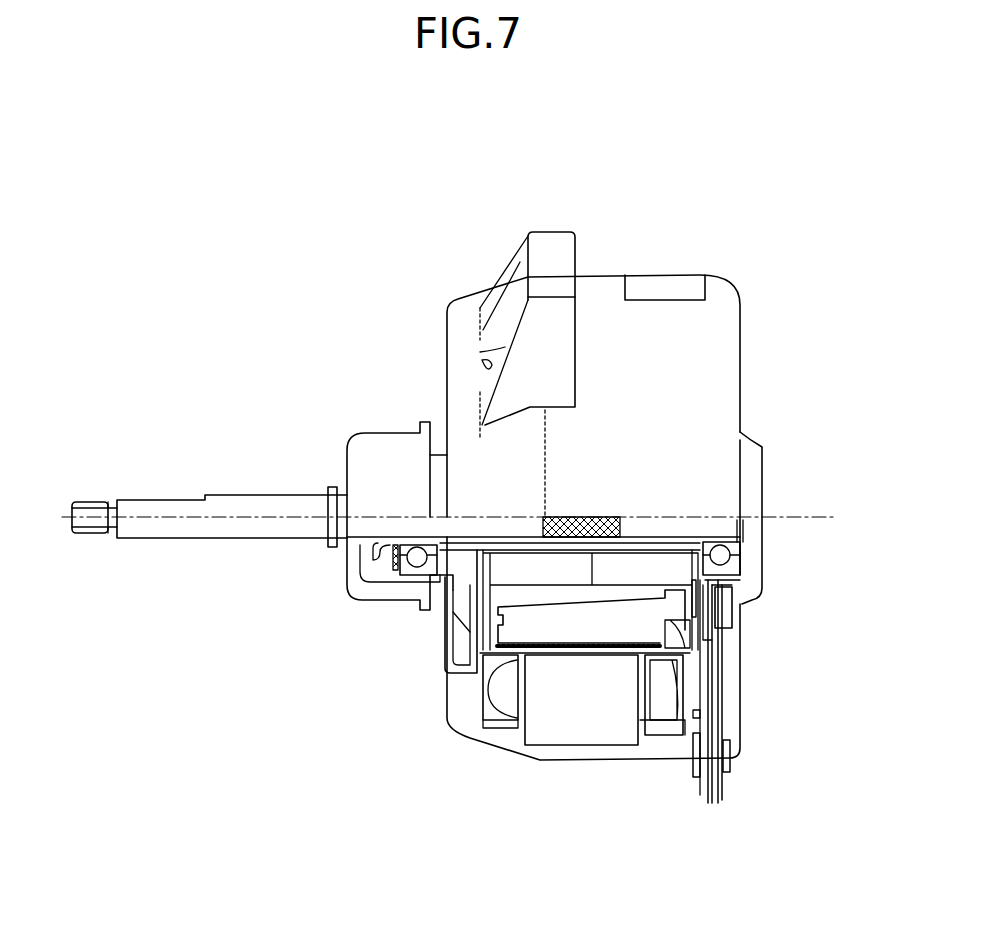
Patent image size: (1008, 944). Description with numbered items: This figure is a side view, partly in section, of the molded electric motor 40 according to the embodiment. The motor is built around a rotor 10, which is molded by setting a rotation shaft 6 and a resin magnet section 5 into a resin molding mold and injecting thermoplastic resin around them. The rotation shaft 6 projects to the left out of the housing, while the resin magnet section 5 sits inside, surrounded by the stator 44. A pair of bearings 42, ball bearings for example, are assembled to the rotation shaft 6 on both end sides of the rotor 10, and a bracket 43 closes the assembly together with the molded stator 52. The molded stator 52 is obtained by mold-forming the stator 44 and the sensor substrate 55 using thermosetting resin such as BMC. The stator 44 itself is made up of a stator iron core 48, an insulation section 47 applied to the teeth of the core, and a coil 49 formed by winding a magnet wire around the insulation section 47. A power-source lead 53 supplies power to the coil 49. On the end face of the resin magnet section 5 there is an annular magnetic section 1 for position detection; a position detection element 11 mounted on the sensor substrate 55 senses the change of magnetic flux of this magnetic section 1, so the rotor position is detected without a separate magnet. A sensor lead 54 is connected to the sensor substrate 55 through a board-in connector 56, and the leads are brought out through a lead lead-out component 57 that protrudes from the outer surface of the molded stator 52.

The molded electric motor 40 is at (670, 171).
The molded stator 52 is at (663, 295).
The rotation shaft 6 is at (152, 538).
The bearings 42 is at (410, 567).
The bracket 43 is at (462, 620).
The resin magnet section 5 is at (590, 623).
The stator 44 is at (540, 780).
The coil 49 is at (495, 700).
The insulation section 47 is at (503, 723).
The stator iron core 48 is at (545, 718).
The magnetic section 1 is at (675, 618).
The rotor 10 is at (684, 658).
The position detection element 11 is at (703, 607).
The sensor substrate 55 is at (708, 582).
The board-in connector 56 is at (728, 588).
The sensor lead 54 is at (722, 793).
The lead lead-out component 57 is at (733, 768).
The power-source lead 53 is at (692, 785).